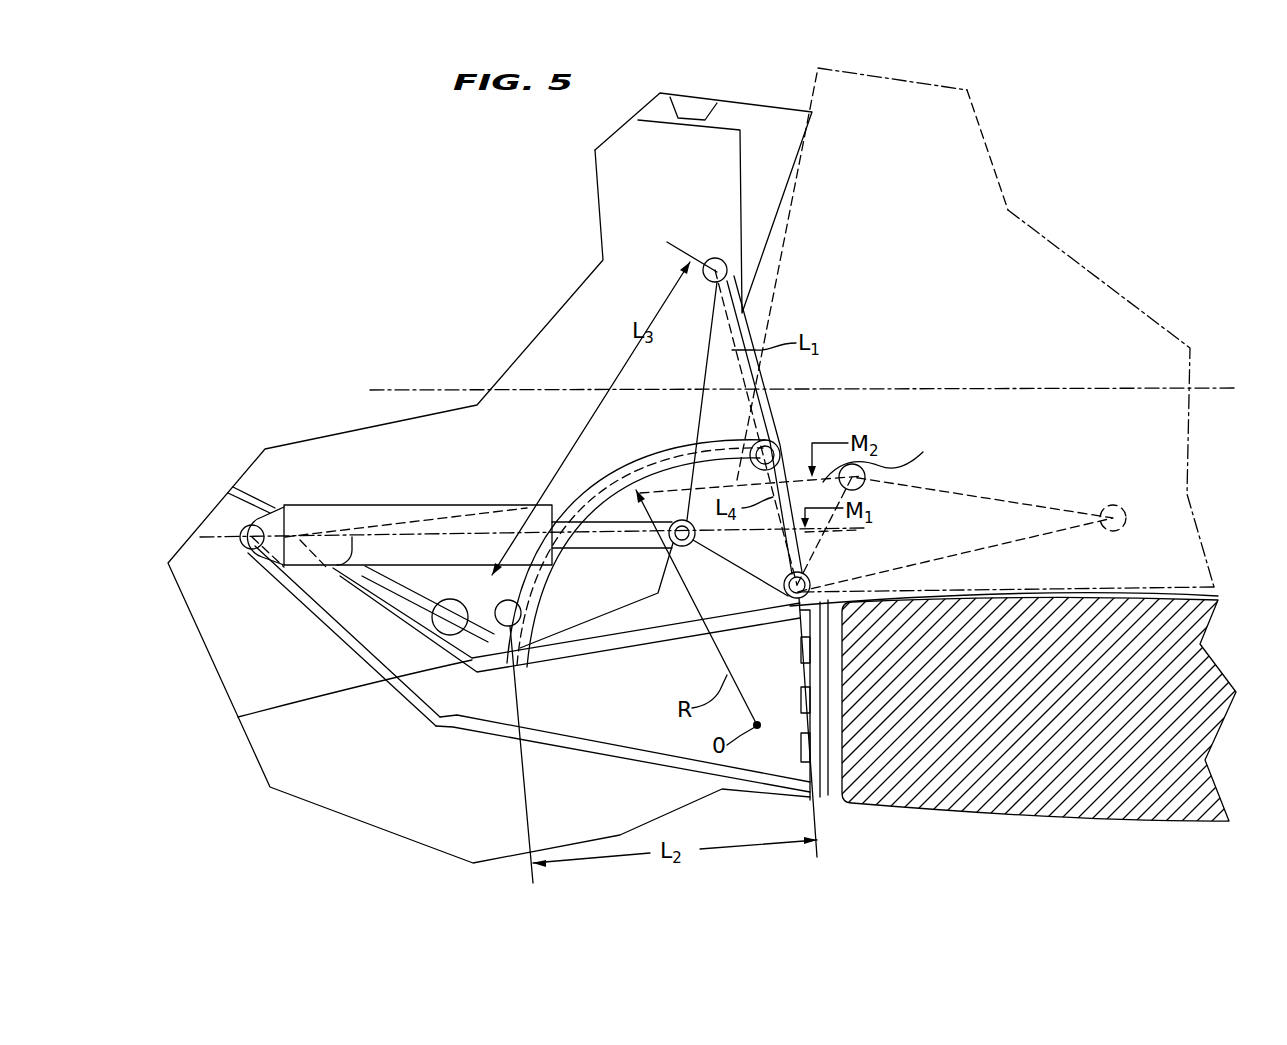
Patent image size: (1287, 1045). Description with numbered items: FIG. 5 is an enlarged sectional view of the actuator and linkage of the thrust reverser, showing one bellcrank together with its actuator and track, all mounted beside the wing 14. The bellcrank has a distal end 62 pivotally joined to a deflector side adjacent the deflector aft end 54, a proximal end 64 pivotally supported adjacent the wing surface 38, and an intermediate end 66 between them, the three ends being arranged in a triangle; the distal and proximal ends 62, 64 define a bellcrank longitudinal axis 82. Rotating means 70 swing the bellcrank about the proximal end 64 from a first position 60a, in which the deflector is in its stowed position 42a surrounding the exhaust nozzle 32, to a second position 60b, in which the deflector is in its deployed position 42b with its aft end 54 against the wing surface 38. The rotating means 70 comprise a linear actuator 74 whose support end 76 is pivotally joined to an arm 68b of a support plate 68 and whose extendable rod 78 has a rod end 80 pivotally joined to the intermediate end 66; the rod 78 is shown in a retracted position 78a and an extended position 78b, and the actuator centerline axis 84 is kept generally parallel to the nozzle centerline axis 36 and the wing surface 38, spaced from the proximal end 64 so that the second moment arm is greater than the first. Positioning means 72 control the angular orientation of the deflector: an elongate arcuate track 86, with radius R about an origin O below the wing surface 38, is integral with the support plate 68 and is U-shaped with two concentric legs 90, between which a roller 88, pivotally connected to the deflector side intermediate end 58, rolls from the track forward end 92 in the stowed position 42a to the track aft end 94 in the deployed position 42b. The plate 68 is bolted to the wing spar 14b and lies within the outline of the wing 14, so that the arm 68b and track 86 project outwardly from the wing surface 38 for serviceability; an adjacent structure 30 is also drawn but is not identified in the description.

The wing 14 is at (948, 830).
The wing spar 14b is at (838, 743).
The fixed structure upper portion 30 is at (740, 168).
The exhaust nozzle 32 is at (638, 125).
The nozzle centerline axis 36 is at (990, 388).
The wing surface 38 is at (990, 593).
The stowed position 42a is at (752, 100).
The deployed position 42b is at (990, 145).
The aft end 54 is at (773, 225).
The deflector side intermediate end 58 is at (423, 630).
The bellcrank first position 60a is at (768, 407).
The bellcrank second position 60b is at (997, 487).
The distal end 62 is at (716, 258).
The proximal end 64 is at (812, 586).
The intermediate end 66 is at (695, 541).
The support plate 68 is at (435, 716).
The support arm 68b is at (340, 636).
The rotating means 70 is at (462, 490).
The positioning means 72 is at (642, 444).
The linear actuator 74 is at (370, 503).
The support end 76 is at (250, 554).
The extendable rod 78 is at (589, 502).
The retracted position 78a is at (677, 565).
The extended position 78b is at (877, 480).
The rod end 80 is at (705, 452).
The bellcrank longitudinal axis 82 is at (730, 328).
The actuator longitudinal centerline axis 84 is at (307, 595).
The elongate track 86 is at (603, 472).
The roller 88 is at (423, 690).
The legs 90 is at (557, 577).
The track forward end 92 is at (393, 610).
The track aft end 94 is at (770, 390).